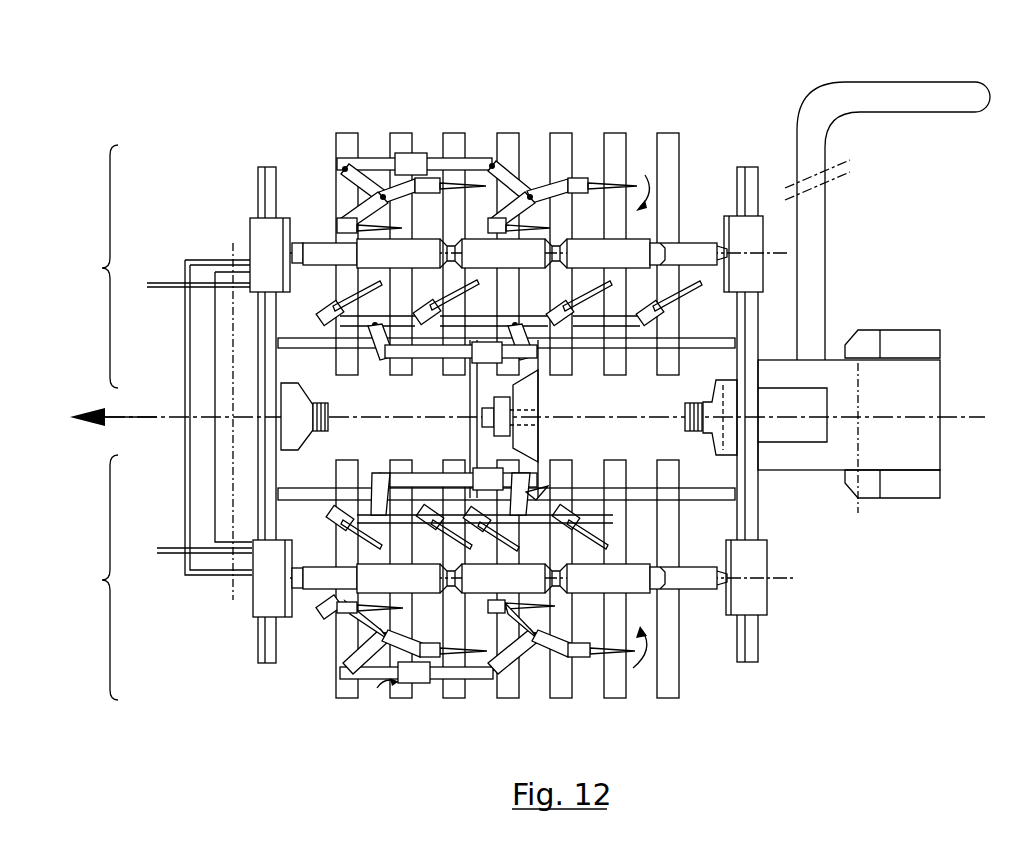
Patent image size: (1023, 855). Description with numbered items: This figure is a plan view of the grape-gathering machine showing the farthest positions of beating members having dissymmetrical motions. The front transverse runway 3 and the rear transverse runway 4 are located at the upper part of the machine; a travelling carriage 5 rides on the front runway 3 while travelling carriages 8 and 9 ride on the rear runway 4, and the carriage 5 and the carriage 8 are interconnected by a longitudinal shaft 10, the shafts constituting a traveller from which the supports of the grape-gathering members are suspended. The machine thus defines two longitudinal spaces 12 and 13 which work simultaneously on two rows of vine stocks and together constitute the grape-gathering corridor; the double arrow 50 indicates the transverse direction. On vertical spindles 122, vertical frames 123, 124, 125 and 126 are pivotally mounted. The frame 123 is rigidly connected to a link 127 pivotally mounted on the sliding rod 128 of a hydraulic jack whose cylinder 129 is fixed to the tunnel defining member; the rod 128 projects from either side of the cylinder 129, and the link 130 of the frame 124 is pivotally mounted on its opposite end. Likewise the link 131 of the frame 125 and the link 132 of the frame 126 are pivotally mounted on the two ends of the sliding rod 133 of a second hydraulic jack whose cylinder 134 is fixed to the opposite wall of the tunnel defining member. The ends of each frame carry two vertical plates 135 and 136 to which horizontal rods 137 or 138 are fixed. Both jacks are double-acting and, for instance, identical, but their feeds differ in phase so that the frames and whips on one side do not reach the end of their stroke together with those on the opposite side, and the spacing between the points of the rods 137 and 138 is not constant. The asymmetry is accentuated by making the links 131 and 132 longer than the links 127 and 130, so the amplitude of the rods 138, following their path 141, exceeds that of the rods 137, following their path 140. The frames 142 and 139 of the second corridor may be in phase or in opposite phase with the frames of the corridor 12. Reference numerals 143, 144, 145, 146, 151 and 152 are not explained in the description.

The transverse runway 3 is at (262, 186).
The transverse runway 4 is at (742, 172).
The travelling carriage 5 is at (262, 228).
The travelling carriage 8 is at (755, 228).
The travelling carriage 9 is at (760, 586).
The longitudinal shaft 10 is at (685, 243).
The longitudinal space 12 is at (95, 266).
The longitudinal space 13 is at (98, 577).
The double arrow 50 is at (118, 418).
The vertical spindle 122 is at (380, 513).
The vertical frame 123 is at (345, 492).
The vertical frame 124 is at (540, 508).
The vertical frame 125 is at (365, 625).
The vertical frame 126 is at (560, 648).
The link 127 is at (375, 492).
The sliding rod 128 is at (421, 478).
The cylinder 129 is at (492, 475).
The link 130 is at (525, 480).
The link 131 is at (358, 680).
The link 132 is at (515, 672).
The sliding rod 133 is at (463, 680).
The cylinder 134 is at (420, 683).
The vertical plate 135 is at (338, 517).
The vertical plate 136 is at (448, 520).
The horizontal rod 137 is at (505, 288).
The horizontal rod 138 is at (596, 183).
The frame 139 is at (368, 345).
The path 140 is at (555, 320).
The path 141 is at (360, 215).
The frame 142 is at (553, 180).
The actuator block 143 is at (487, 363).
The connecting link 144 is at (428, 360).
The upper connecting link 145 is at (462, 158).
The upper actuator block 146 is at (410, 160).
The pivoting direction arrow 151 is at (645, 175).
The clamp jaw 152 is at (430, 290).